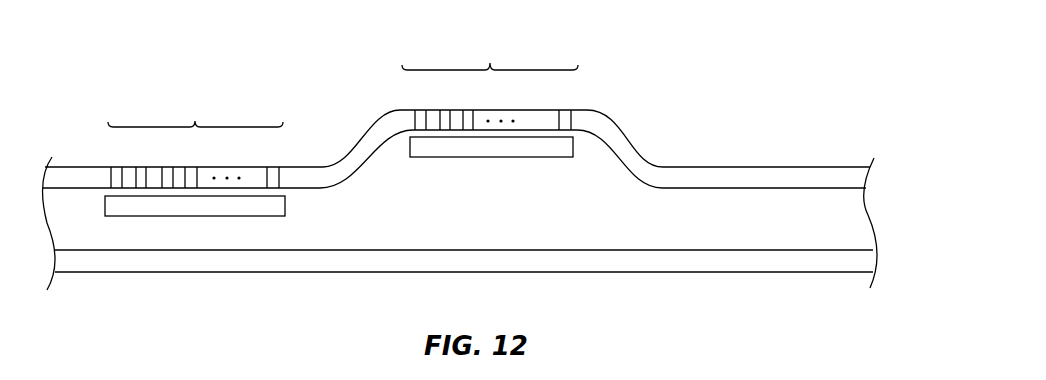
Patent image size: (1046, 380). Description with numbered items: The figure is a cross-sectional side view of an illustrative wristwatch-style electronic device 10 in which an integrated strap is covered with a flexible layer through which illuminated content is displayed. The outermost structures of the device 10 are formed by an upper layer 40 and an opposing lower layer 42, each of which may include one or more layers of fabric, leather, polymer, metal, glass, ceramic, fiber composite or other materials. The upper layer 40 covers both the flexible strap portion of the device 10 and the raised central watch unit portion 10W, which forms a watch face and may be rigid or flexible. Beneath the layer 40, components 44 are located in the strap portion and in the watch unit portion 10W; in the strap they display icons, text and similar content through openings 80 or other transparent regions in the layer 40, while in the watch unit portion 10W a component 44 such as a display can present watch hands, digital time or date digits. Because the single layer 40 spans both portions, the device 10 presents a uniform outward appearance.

The electronic device 10 is at (195, 113).
The watch unit portion 10W is at (490, 54).
The layer 40 is at (79, 173).
The layer 42 is at (110, 262).
The component 44 is at (223, 208).
The openings 80 is at (118, 170).